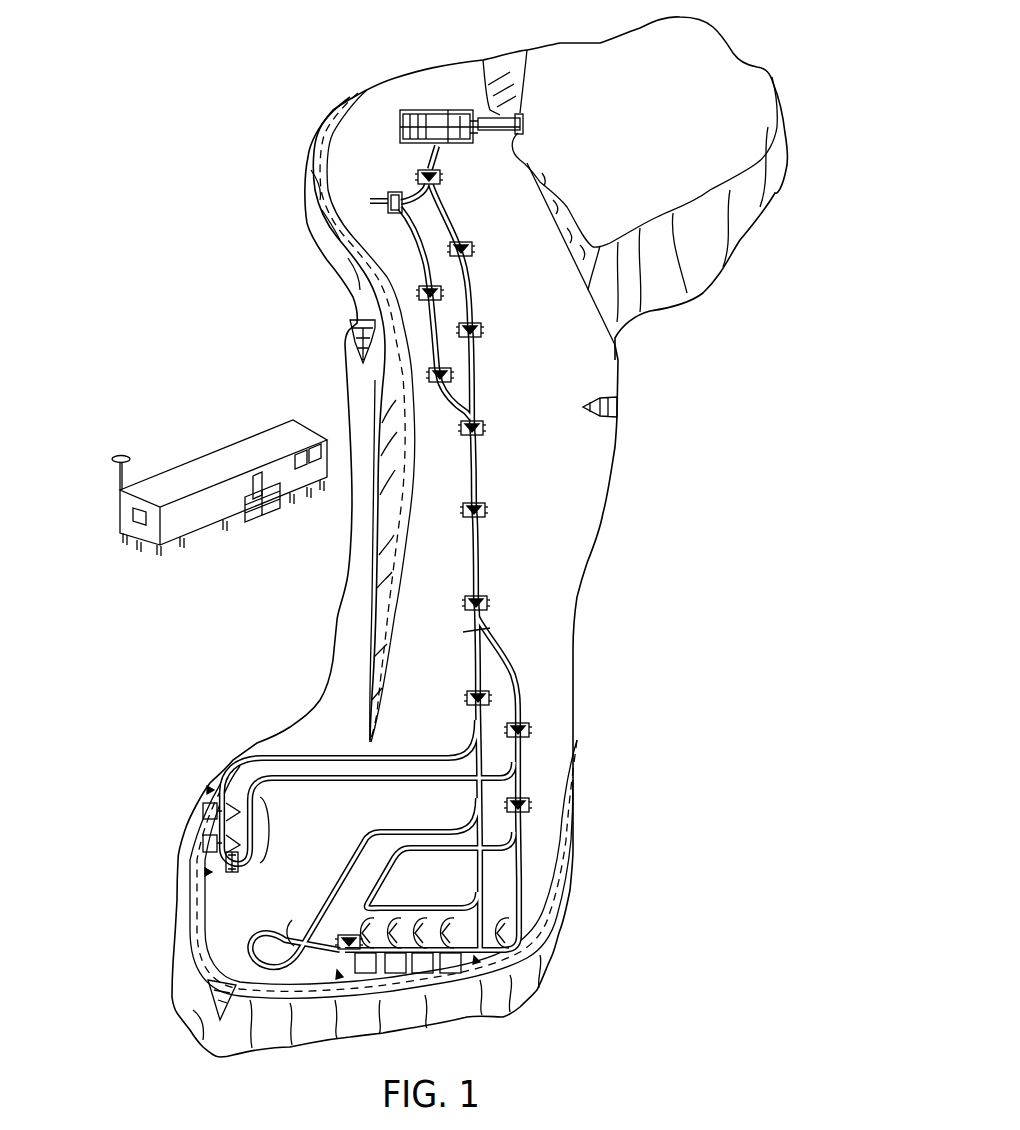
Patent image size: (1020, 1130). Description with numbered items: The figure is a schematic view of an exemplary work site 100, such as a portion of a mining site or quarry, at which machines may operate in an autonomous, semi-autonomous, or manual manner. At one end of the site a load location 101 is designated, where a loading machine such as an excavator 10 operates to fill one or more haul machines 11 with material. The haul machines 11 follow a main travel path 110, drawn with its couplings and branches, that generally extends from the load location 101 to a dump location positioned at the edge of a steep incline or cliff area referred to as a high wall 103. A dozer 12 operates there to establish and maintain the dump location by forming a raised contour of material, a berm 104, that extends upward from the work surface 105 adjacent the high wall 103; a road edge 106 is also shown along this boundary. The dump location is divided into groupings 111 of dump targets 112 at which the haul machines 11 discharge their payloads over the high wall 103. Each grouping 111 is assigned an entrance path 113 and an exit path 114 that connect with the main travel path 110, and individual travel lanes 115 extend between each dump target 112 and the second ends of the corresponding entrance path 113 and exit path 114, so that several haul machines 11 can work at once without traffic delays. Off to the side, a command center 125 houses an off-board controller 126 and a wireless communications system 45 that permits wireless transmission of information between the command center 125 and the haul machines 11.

The work site 100 is at (445, 540).
The load location 101 is at (340, 80).
The excavator 10 is at (413, 106).
The haul machines 11 is at (474, 190).
The dozer 12 is at (355, 322).
The wireless communications system 45 is at (183, 400).
The command center 125 is at (224, 457).
The off-board controller 126 is at (219, 387).
The high wall 103 is at (437, 1003).
The berm 104 is at (570, 838).
The work surface 105 is at (323, 713).
The road edge 106 is at (563, 783).
The main travel path 110 is at (420, 556).
The groupings 111 is at (267, 828).
The dump targets 112 is at (225, 862).
The entrance path 113 is at (378, 778).
The exit path 114 is at (400, 760).
The travel lanes 115 is at (238, 800).